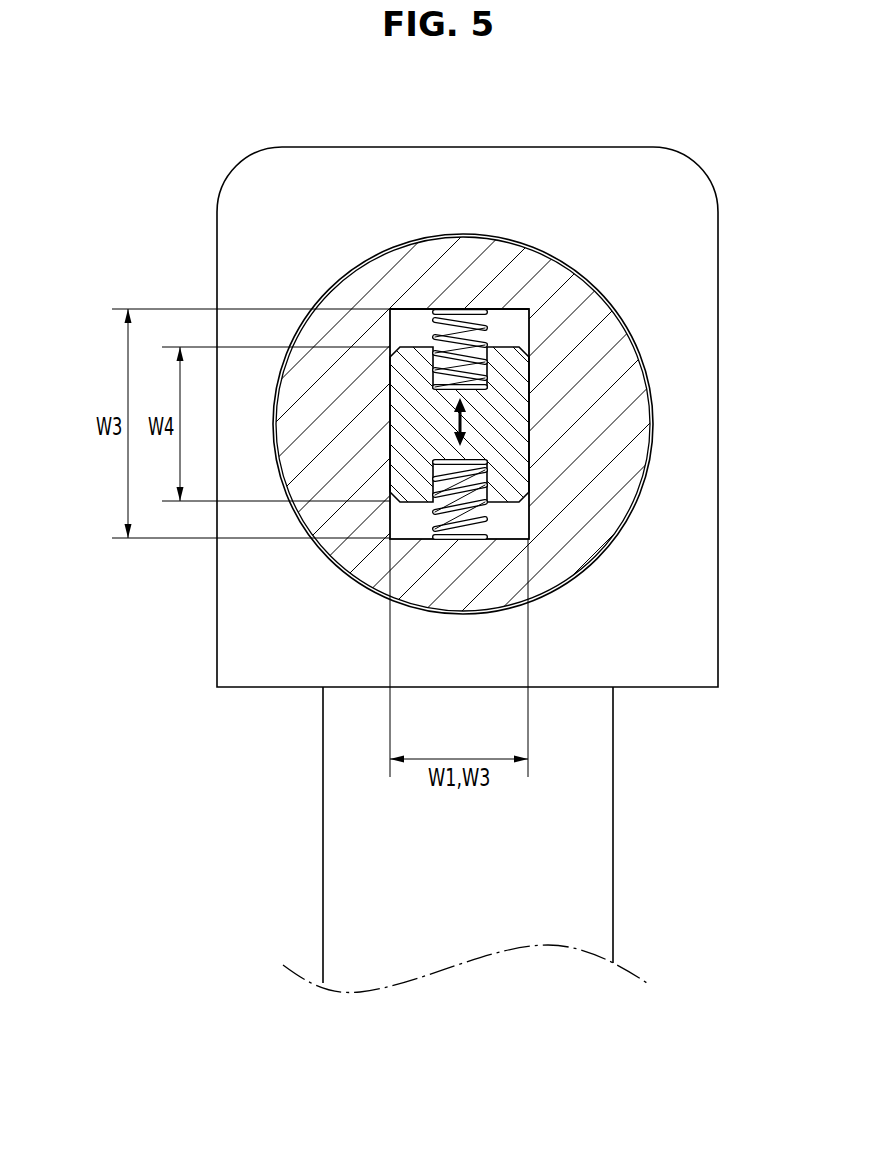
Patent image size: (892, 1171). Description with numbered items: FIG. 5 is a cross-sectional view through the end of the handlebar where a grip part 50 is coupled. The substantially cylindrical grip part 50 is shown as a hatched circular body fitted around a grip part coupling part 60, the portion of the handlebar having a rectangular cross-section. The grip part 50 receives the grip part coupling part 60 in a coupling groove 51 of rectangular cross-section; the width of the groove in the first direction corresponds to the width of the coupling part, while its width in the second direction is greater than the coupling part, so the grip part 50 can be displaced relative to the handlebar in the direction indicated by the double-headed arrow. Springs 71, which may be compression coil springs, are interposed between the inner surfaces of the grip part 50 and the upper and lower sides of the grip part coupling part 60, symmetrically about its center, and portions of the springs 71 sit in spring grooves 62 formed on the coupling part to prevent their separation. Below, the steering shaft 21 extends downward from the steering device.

The steering shaft 21 is at (603, 847).
The grip part 50 is at (600, 423).
The coupling groove 51 is at (533, 363).
The grip part coupling part 60 is at (493, 434).
The spring groove 62 is at (530, 318).
The spring 71 is at (471, 308).